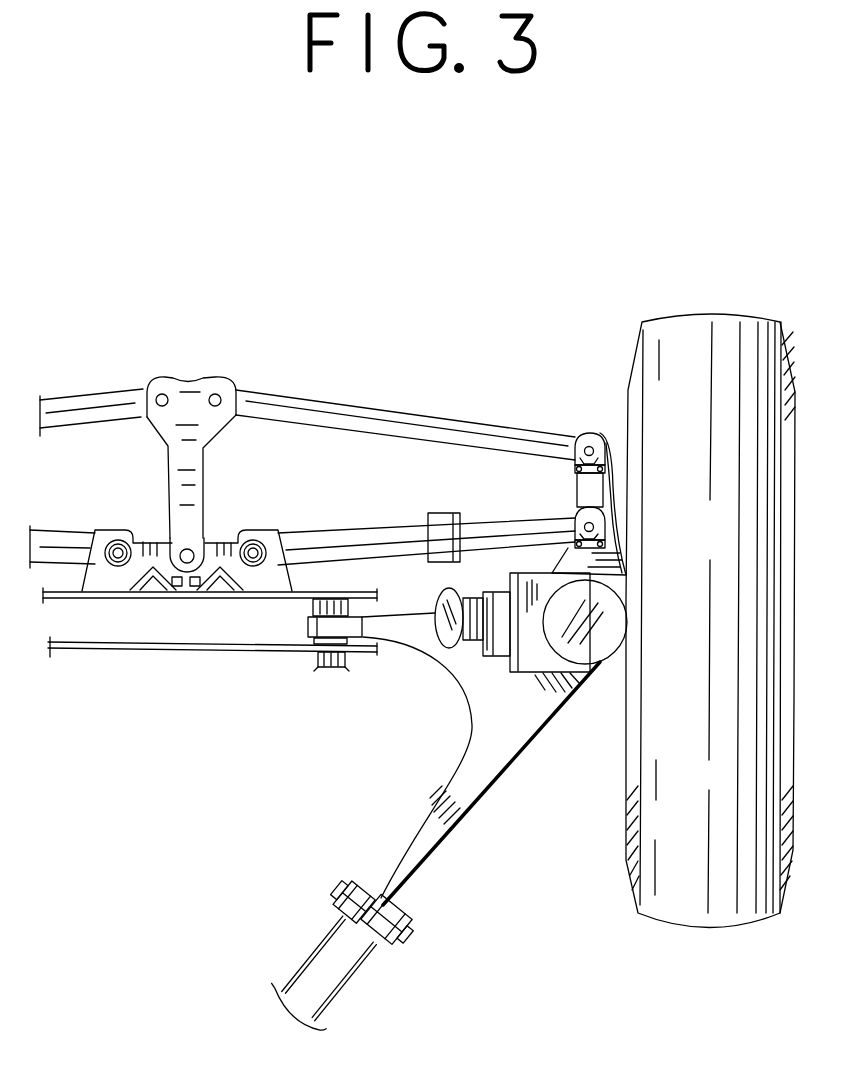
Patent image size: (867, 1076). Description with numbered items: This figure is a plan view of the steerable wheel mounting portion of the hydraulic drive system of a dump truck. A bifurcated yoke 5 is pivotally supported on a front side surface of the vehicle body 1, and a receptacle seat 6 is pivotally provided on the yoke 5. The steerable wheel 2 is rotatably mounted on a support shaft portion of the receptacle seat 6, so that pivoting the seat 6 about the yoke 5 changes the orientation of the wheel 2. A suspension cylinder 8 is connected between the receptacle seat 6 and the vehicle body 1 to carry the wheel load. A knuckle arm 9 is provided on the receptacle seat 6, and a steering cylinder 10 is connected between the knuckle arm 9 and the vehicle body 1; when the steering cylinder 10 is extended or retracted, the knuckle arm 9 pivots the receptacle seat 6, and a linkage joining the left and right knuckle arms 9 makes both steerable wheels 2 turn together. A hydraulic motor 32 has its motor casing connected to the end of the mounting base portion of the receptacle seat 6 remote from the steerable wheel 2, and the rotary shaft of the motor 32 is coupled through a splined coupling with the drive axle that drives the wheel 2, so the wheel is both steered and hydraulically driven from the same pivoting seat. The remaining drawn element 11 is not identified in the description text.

The vehicle body 1 is at (263, 636).
The steerable wheel 2 is at (763, 553).
The bifurcated yoke 5 is at (493, 755).
The receptacle seat 6 is at (540, 655).
The suspension cylinder 8 is at (605, 645).
The knuckle arm 9 is at (578, 490).
The steering cylinder 10 is at (362, 540).
The upper arm 11 is at (308, 410).
The hydraulic motor 32 is at (477, 637).